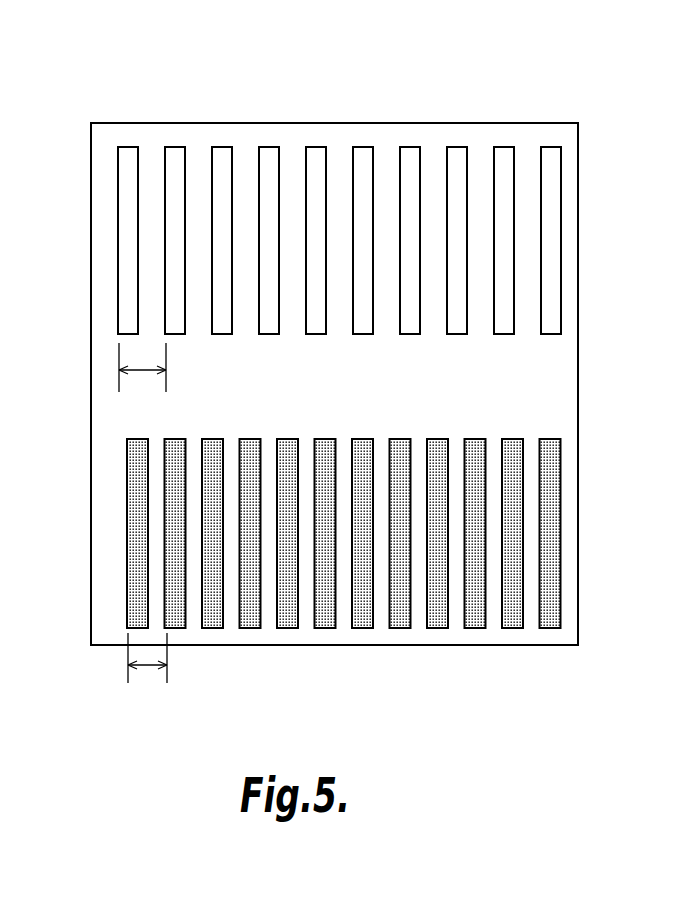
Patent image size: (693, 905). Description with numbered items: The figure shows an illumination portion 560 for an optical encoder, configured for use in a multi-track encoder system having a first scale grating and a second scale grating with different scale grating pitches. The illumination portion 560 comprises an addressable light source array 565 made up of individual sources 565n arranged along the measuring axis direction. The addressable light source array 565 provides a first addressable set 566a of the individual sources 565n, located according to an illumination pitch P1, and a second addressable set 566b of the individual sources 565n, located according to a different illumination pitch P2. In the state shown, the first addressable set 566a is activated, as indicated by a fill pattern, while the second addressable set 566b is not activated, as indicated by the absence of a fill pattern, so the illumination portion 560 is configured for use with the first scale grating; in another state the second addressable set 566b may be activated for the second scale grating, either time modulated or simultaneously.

The illumination portion 560 is at (567, 65).
The addressable light source array 565 is at (118, 238).
The individual sources 565n is at (108, 340).
The first addressable set 566a is at (568, 440).
The second addressable set 566b is at (568, 147).
The illumination pitch P1 is at (146, 667).
The illumination pitch P2 is at (140, 372).